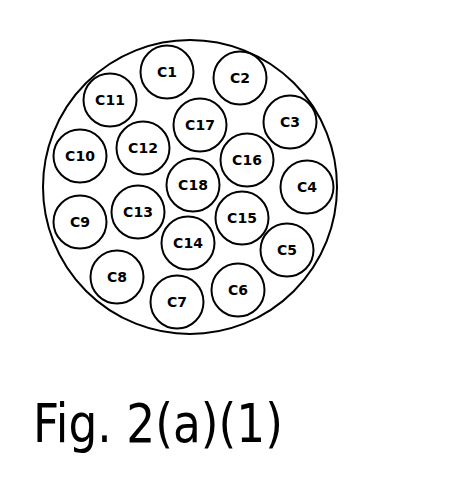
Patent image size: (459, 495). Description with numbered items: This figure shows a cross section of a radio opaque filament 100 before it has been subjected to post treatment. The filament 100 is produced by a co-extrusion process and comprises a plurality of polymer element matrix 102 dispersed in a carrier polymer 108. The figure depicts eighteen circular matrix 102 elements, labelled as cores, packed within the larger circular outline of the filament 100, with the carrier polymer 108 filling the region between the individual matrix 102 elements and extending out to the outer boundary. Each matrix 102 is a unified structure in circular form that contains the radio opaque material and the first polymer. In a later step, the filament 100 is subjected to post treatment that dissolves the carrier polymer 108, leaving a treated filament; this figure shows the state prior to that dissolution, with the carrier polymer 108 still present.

The filament 100 is at (312, 48).
The polymer element matrix 102 is at (279, 114).
The carrier polymer 108 is at (322, 152).